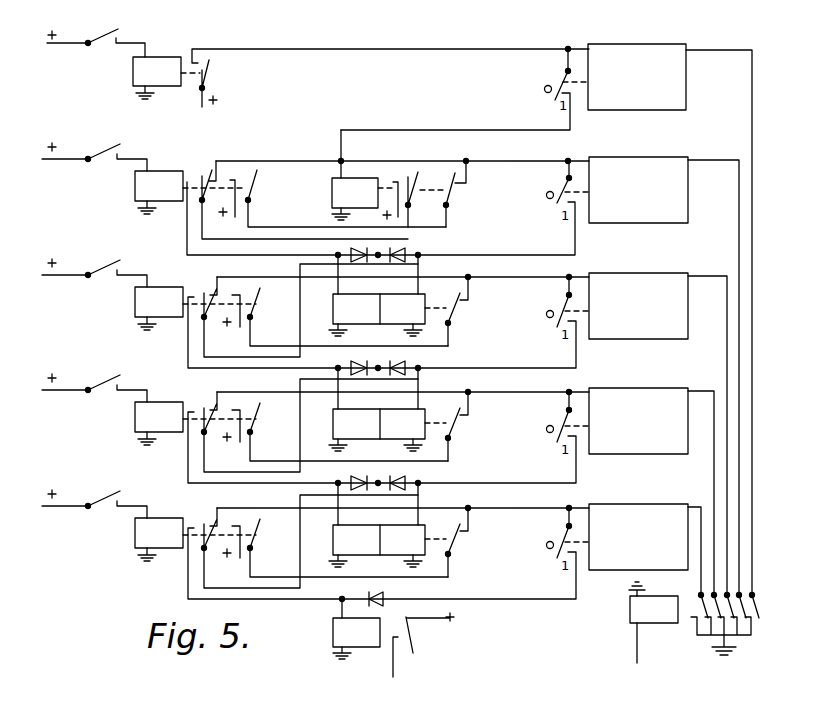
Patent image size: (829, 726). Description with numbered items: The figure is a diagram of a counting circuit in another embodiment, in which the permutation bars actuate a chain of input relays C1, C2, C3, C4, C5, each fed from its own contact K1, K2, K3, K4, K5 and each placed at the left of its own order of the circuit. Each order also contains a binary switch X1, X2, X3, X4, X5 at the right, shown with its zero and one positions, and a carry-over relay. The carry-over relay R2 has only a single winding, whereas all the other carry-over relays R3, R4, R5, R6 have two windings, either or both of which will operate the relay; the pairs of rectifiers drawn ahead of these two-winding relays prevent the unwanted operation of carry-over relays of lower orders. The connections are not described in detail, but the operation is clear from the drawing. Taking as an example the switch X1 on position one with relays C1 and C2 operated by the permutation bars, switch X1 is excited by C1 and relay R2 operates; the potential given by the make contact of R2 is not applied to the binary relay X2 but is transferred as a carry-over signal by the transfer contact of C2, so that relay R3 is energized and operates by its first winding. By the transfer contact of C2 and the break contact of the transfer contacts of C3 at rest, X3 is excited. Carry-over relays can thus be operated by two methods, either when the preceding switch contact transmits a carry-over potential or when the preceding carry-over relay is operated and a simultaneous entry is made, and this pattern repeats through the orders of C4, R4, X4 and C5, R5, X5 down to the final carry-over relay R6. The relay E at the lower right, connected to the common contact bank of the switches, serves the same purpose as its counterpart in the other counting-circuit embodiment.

The key switch K1 is at (96, 34).
The key switch K2 is at (94, 149).
The key switch K3 is at (94, 265).
The key switch K4 is at (94, 380).
The key switch K5 is at (94, 496).
The input relay C1 is at (157, 78).
The input relay C2 is at (159, 192).
The input relay C3 is at (159, 308).
The input relay C4 is at (159, 423).
The input relay C5 is at (159, 539).
The carry-over relay R2 is at (332, 192).
The carry-over relay R3 is at (333, 309).
The carry-over relay R4 is at (333, 424).
The carry-over relay R5 is at (333, 540).
The carry-over relay R6 is at (333, 629).
The switch X1 is at (637, 77).
The binary relay X2 is at (638, 190).
The binary relay X3 is at (638, 306).
The binary relay X4 is at (638, 421).
The binary relay X5 is at (638, 537).
The relay E is at (653, 622).